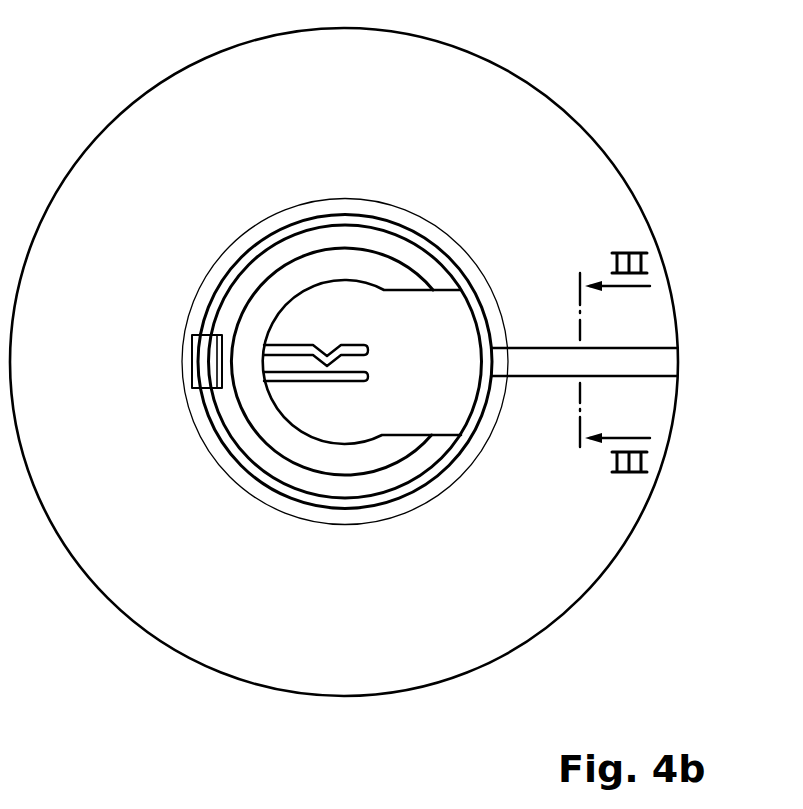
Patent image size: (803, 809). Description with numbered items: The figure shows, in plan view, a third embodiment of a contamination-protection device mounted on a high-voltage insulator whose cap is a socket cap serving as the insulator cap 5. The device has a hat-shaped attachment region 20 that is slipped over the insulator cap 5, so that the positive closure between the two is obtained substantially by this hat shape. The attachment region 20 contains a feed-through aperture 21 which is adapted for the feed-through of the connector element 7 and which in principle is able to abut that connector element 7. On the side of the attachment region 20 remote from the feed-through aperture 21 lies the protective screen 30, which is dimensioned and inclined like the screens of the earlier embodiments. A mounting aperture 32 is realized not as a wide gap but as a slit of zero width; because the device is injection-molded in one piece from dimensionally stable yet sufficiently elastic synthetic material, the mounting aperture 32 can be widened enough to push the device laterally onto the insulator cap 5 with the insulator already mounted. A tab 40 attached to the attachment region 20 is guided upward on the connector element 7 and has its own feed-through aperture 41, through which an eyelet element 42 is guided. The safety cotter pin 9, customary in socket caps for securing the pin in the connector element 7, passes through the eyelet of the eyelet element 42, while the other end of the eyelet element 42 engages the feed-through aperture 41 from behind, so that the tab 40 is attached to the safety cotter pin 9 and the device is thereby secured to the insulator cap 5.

The insulator cap 5 is at (433, 327).
The connector element 7 is at (345, 267).
The safety cotter pin 9 is at (305, 348).
The attachment region 20 is at (432, 486).
The feed-through aperture 21 is at (256, 467).
The protective screen 30 is at (272, 657).
The mounting aperture 32 is at (678, 360).
The tab 40 is at (200, 384).
The feed-through aperture 41 is at (216, 347).
The eyelet element 42 is at (214, 360).